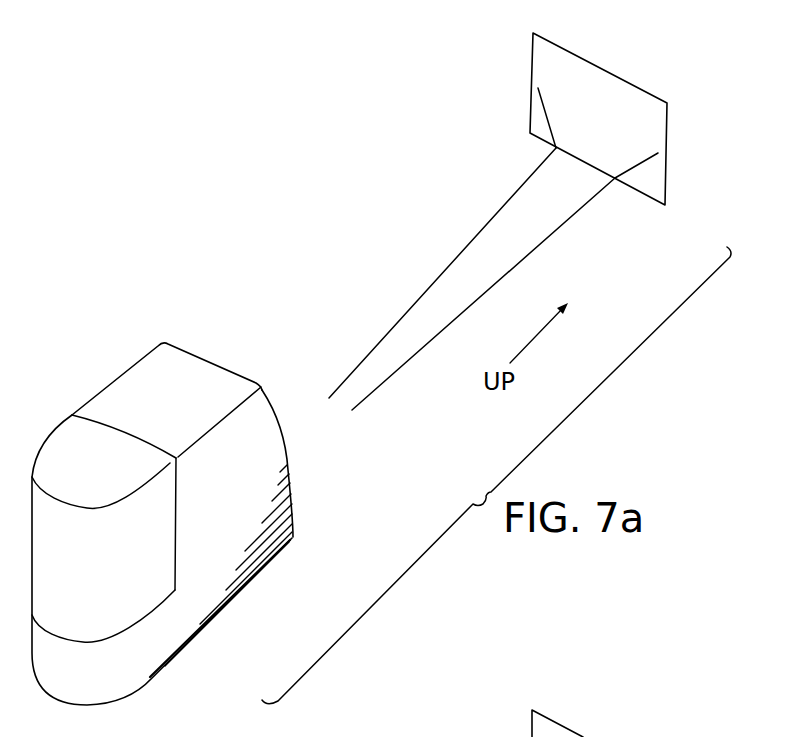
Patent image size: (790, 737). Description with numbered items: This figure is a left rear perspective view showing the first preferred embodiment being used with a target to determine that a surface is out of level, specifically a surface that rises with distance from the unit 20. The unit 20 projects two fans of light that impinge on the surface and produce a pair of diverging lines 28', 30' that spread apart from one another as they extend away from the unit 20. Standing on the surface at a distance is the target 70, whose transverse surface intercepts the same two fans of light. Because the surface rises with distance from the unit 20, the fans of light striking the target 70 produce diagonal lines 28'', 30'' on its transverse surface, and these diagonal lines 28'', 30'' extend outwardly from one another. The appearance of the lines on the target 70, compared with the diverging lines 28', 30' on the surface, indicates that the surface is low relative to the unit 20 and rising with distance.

The unit 20 is at (117, 361).
The target 70 is at (637, 135).
The diverging line 28' is at (442, 273).
The diagonal line 28'' is at (507, 118).
The diverging line 30' is at (492, 294).
The diagonal line 30'' is at (672, 177).